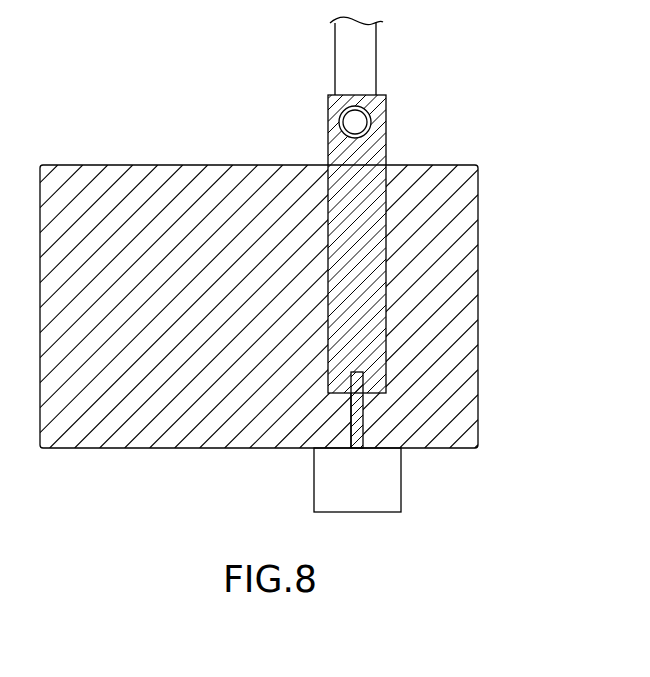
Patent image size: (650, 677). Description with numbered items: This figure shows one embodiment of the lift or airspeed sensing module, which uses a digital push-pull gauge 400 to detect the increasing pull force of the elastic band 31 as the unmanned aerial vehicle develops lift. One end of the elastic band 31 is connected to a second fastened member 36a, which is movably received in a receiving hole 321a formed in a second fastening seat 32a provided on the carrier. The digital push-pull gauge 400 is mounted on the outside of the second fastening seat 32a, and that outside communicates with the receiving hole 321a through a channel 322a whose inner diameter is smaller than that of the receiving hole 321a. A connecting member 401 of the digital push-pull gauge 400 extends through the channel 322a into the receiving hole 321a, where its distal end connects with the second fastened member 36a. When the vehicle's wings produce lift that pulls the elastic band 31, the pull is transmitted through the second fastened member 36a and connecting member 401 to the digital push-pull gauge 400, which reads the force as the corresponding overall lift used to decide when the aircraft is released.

The elastic band 31 is at (363, 48).
The second fastened member 36a is at (386, 113).
The receiving hole 321a is at (386, 240).
The second fastening seat 32a is at (426, 352).
The channel 322a is at (363, 425).
The digital push-pull gauge 400 is at (383, 487).
The connecting member 401 is at (350, 424).